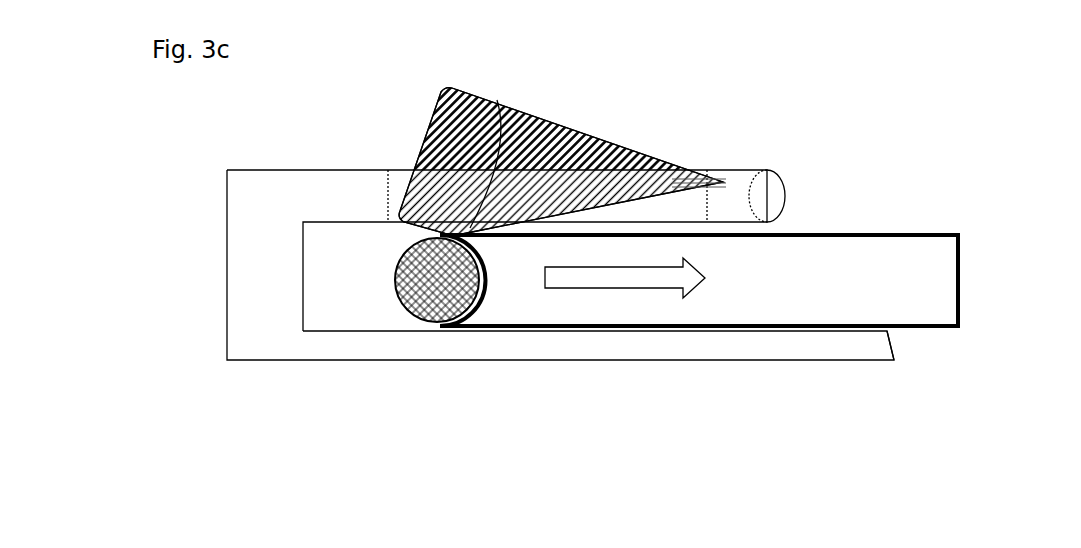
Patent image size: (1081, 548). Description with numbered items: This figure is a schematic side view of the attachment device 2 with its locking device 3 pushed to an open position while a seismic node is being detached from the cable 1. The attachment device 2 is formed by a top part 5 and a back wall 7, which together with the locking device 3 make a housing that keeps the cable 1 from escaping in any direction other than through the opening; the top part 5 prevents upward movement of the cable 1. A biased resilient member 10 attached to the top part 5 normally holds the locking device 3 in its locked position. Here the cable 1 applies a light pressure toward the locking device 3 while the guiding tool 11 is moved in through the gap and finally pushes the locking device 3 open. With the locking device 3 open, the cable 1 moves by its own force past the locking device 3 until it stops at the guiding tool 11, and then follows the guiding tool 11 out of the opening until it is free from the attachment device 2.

The cable 1 is at (400, 310).
The attachment device 2 is at (728, 348).
The locking device 3 is at (528, 150).
The top part 5 is at (350, 193).
The back wall 7 is at (258, 240).
The resilient member 10 is at (713, 180).
The guiding tool 11 is at (935, 280).